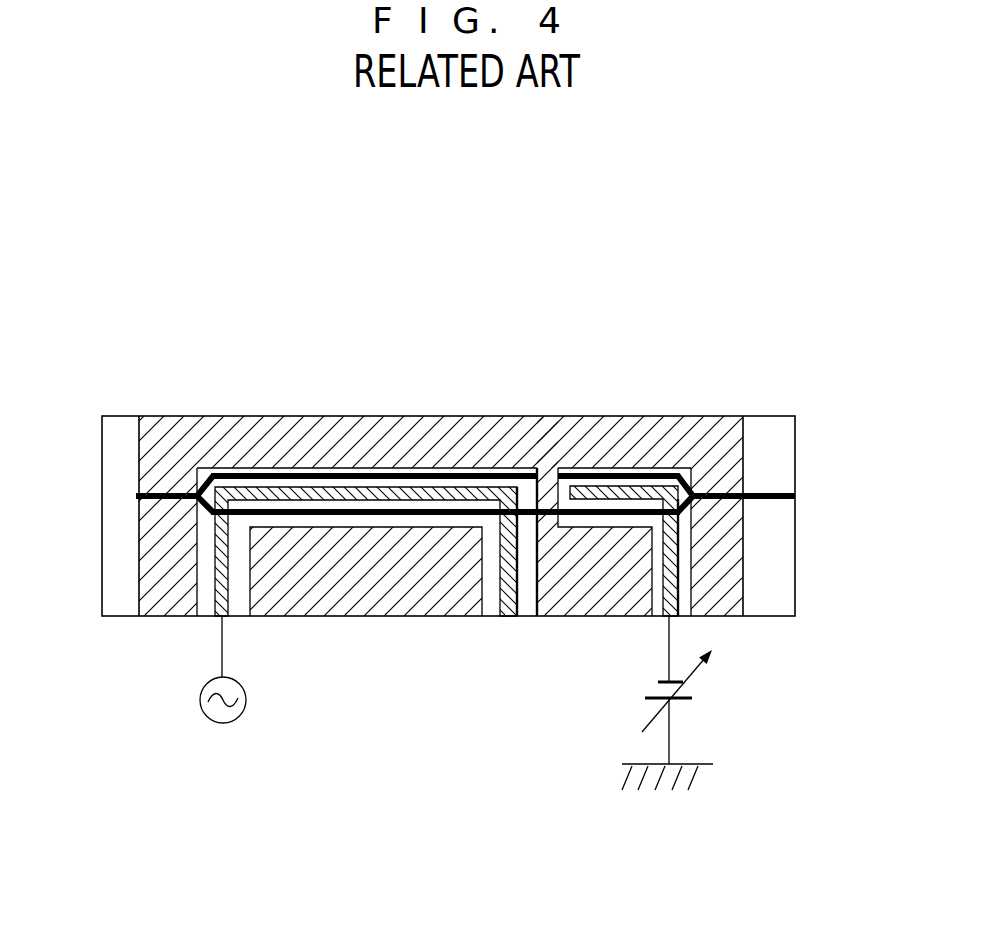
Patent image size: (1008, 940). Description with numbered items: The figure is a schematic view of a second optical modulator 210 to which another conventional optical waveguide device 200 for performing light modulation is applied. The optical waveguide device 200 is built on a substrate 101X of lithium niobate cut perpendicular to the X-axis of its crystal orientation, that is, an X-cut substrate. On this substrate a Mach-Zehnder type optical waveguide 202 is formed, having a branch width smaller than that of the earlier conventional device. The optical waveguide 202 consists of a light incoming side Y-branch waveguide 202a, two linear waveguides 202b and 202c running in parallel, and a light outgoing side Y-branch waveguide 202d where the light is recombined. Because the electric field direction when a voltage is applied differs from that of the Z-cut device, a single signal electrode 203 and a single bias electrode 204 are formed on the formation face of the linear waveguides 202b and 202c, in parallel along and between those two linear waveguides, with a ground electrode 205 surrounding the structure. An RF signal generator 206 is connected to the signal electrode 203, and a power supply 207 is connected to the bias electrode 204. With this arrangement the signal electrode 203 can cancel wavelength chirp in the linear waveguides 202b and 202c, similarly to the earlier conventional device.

The substrate 101X is at (777, 430).
The second optical modulator 210 is at (131, 400).
The optical waveguide device 200 is at (122, 624).
The Mach-Zehnder type optical waveguide 202 is at (779, 492).
The light incoming side Y-branch waveguide 202a is at (200, 475).
The linear waveguide 202b is at (378, 470).
The linear waveguide 202c is at (350, 515).
The light outgoing side Y-branch waveguide 202d is at (715, 478).
The signal electrode 203 is at (285, 497).
The bias electrode 204 is at (667, 577).
The ground electrode 205 is at (511, 430).
The RF signal generator 206 is at (208, 722).
The power supply 207 is at (690, 698).